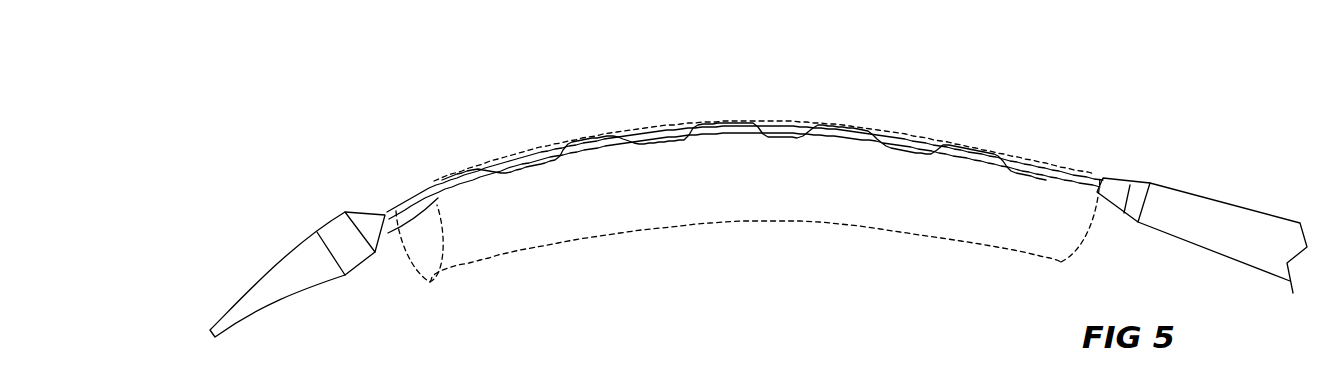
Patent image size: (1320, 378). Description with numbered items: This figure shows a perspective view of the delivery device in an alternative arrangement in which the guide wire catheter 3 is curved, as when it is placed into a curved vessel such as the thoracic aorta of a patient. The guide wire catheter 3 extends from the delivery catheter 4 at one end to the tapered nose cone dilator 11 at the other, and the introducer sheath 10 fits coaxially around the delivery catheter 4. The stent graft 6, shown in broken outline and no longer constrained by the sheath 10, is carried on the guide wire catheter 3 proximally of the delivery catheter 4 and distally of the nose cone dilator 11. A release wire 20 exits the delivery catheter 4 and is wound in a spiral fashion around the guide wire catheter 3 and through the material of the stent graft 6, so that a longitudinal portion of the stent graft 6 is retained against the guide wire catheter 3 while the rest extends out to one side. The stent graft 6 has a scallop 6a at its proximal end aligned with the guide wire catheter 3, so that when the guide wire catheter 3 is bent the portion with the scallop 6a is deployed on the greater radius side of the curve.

The guide wire catheter 3 is at (870, 133).
The delivery catheter 4 is at (1120, 193).
The stent graft 6 is at (750, 222).
The scallop 6a is at (428, 190).
The introducer sheath 10 is at (1242, 237).
The nose cone dilator 11 is at (275, 275).
The release wire 20 is at (712, 122).